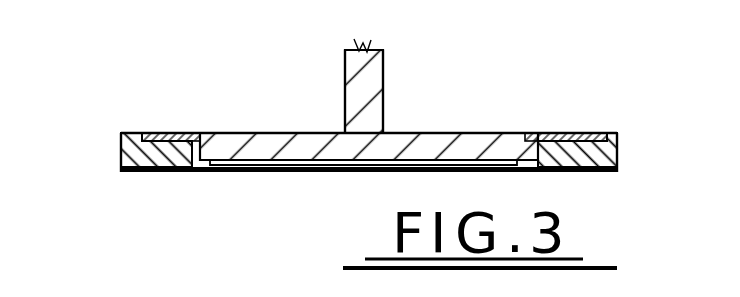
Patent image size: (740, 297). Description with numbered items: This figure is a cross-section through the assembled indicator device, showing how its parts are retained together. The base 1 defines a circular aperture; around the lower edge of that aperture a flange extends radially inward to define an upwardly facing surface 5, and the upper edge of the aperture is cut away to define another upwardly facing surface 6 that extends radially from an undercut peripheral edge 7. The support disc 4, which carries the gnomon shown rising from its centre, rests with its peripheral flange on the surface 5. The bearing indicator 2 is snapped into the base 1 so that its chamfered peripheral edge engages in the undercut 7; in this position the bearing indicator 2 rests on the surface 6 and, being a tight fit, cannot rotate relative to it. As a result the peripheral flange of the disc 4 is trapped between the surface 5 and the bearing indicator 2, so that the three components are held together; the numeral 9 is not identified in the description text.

The base 1 is at (142, 172).
The bearing indicator 2 is at (173, 133).
The support disc 4 is at (266, 133).
The upwardly facing surface 5 is at (215, 160).
The upwardly facing surface 6 is at (152, 133).
The undercut peripheral edge 7 is at (578, 132).
The hub shaft 9 is at (356, 105).